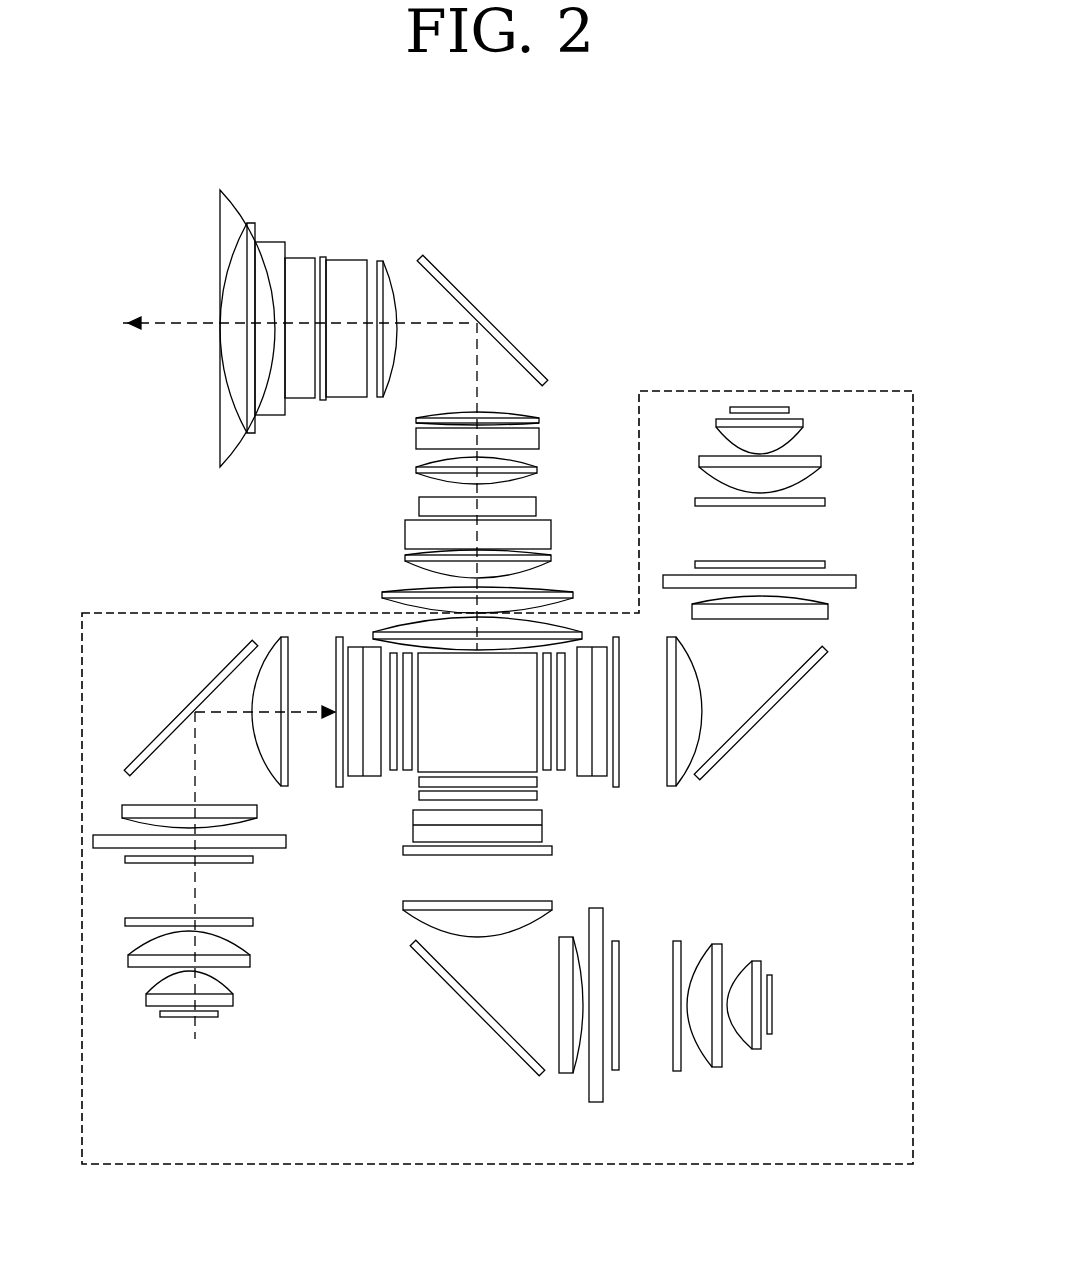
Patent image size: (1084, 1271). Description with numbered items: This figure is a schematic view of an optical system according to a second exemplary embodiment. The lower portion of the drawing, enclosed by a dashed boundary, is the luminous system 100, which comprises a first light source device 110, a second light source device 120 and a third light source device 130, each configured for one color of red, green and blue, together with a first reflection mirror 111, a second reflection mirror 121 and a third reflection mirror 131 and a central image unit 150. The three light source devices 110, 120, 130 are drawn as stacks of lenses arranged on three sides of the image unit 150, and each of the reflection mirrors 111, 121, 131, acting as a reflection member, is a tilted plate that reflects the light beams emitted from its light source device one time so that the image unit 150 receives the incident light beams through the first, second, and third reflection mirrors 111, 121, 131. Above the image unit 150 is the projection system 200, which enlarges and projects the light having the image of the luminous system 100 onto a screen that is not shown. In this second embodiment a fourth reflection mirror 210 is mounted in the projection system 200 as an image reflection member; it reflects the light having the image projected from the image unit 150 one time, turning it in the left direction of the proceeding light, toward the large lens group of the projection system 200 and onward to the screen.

The luminous system 100 is at (688, 390).
The first light source device 110 is at (282, 1050).
The first reflection mirror 111 is at (172, 730).
The second light source device 120 is at (778, 1103).
The second reflection mirror 121 is at (433, 973).
The third light source device 130 is at (852, 405).
The third reflection mirror 131 is at (730, 747).
The image unit 150 is at (428, 759).
The projection system 200 is at (125, 183).
The fourth reflection mirror 210 is at (457, 288).